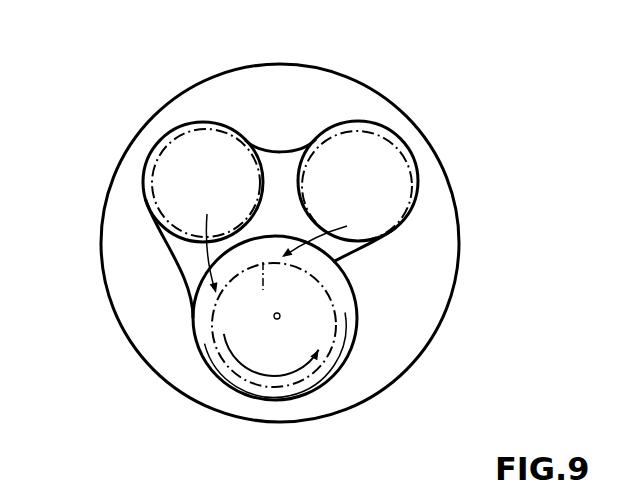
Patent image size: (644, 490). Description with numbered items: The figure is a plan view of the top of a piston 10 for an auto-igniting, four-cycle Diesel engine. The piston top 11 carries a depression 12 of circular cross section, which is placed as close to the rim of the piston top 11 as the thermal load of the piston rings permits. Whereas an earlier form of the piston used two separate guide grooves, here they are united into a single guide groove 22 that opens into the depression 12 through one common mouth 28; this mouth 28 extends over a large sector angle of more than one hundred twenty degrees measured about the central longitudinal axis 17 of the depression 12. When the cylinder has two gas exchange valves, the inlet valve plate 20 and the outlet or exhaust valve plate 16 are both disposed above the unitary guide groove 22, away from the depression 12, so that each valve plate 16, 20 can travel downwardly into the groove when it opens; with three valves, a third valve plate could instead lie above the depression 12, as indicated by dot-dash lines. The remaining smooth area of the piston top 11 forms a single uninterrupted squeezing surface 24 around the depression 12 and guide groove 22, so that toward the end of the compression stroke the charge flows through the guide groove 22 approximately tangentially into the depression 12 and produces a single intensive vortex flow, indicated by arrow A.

The piston 10 is at (461, 230).
The piston top 11 is at (424, 283).
The depression 12 is at (346, 308).
The outlet valve plate 16 is at (205, 142).
The central longitudinal axis 17 is at (273, 316).
The inlet valve plate 20 is at (368, 150).
The guide groove 22 is at (280, 177).
The squeezing surface 24 is at (418, 319).
The common mouth 28 is at (227, 253).
The vortex flow arrow A is at (262, 371).